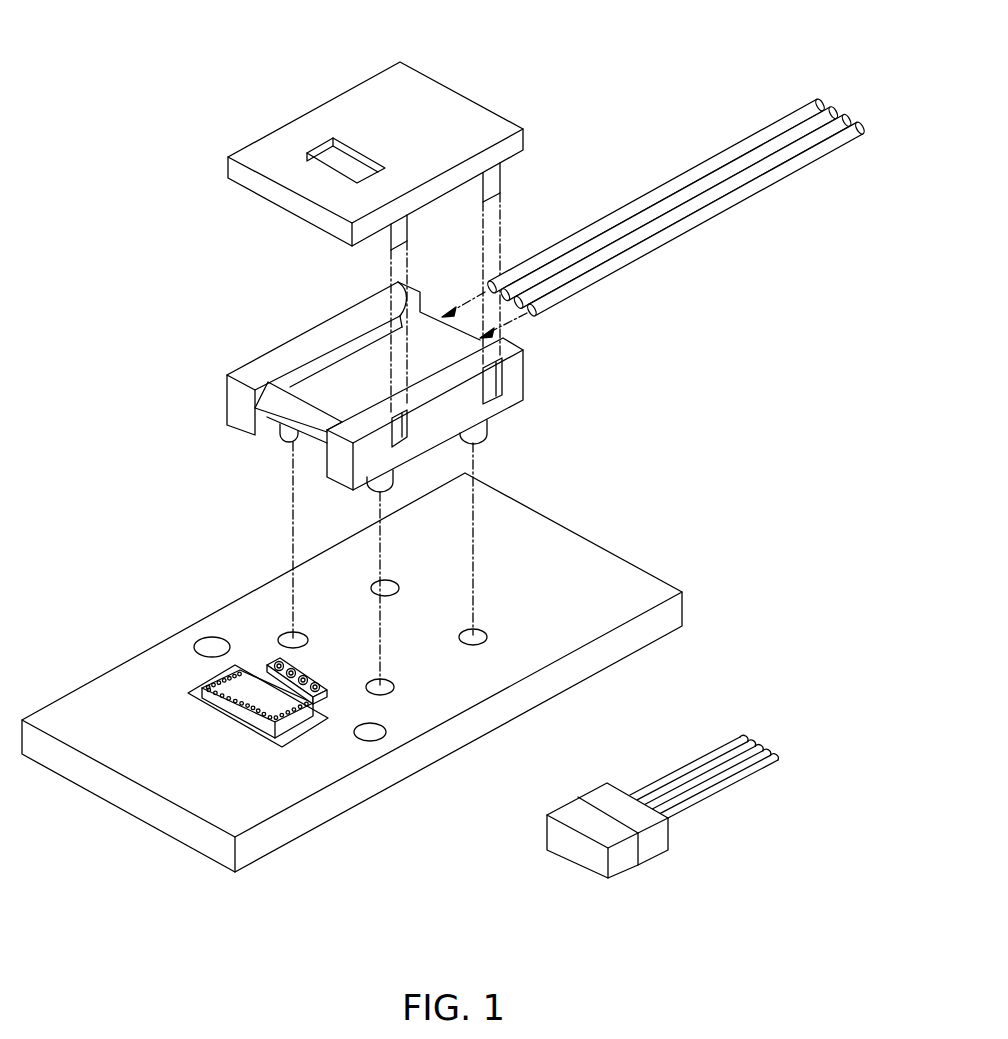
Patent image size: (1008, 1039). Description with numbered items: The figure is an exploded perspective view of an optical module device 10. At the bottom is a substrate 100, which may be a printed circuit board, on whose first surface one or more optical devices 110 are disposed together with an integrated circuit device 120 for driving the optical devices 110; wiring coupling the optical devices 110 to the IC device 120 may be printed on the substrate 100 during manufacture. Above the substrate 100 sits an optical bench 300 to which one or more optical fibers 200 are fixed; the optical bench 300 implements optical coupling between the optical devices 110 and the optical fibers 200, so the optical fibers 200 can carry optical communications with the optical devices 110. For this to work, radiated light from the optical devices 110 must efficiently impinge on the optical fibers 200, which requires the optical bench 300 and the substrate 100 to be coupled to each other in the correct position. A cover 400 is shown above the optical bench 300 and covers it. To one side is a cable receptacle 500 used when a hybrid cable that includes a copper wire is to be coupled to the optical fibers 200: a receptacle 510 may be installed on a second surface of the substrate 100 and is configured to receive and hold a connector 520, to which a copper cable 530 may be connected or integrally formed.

The optical module device 10 is at (138, 81).
The substrate 100 is at (117, 683).
The optical devices 110 is at (332, 702).
The integrated circuit (IC) device 120 is at (277, 712).
The optical fibers 200 is at (648, 248).
The optical bench 300 is at (268, 363).
The cover 400 is at (338, 107).
The cable receptacle 500 is at (686, 816).
The receptacle 510 is at (570, 812).
The connector 520 is at (615, 797).
The copper cable 530 is at (743, 782).